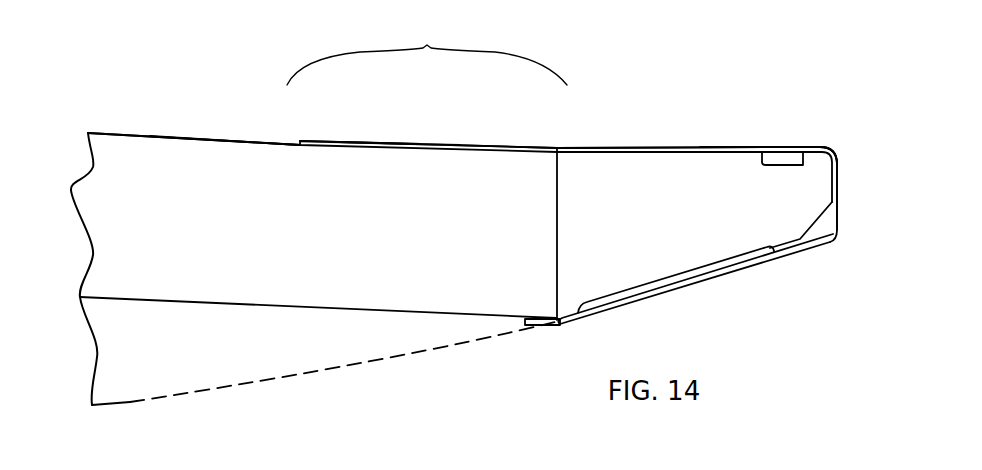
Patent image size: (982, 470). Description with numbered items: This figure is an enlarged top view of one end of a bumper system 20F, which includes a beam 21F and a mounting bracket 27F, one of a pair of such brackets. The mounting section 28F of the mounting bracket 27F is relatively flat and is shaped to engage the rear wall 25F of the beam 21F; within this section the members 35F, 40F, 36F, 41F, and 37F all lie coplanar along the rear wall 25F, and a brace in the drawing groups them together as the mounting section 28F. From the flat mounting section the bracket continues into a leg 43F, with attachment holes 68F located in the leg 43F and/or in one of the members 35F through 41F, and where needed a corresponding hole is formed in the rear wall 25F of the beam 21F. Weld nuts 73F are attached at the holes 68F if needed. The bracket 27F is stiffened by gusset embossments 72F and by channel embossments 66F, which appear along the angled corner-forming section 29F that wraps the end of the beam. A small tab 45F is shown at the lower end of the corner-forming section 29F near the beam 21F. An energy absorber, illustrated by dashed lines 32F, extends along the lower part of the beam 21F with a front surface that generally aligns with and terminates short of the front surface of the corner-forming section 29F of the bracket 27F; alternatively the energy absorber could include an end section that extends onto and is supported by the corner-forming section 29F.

The bumper system 20F is at (168, 90).
The beam 21F is at (121, 120).
The rear wall 25F is at (189, 137).
The mounting section 28F is at (553, 86).
The member 35F is at (315, 139).
The member 40F is at (352, 142).
The member 36F is at (382, 142).
The member 41F is at (427, 145).
The member 37F is at (477, 147).
The leg 43F is at (618, 147).
The attachment holes 68F is at (788, 148).
The mounting bracket 27F is at (833, 123).
The weld nuts 73F is at (768, 165).
The gusset embossments 72F is at (815, 220).
The channel embossments 66F is at (653, 275).
The corner-forming section 29F is at (752, 275).
The bottom tab 45F is at (537, 327).
The dashed lines 32F is at (368, 367).